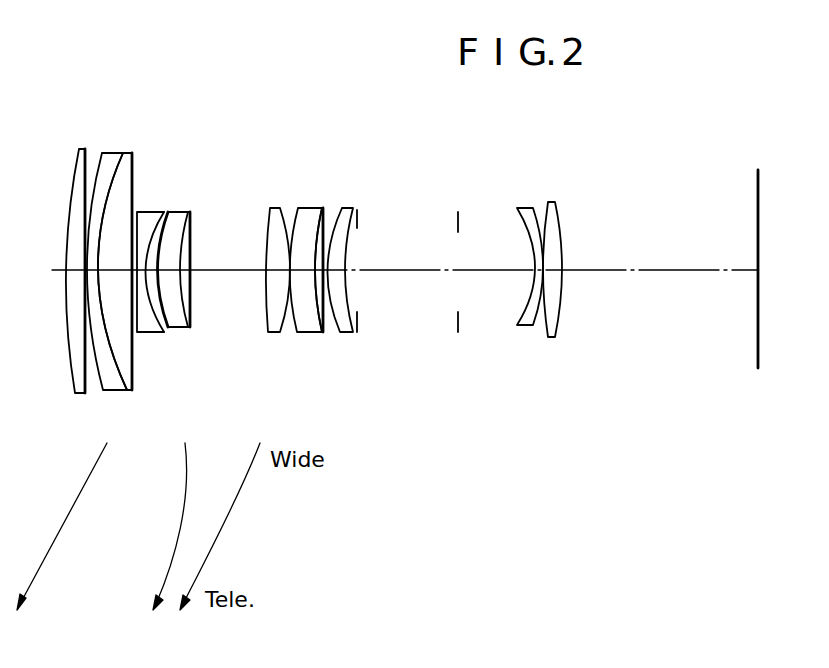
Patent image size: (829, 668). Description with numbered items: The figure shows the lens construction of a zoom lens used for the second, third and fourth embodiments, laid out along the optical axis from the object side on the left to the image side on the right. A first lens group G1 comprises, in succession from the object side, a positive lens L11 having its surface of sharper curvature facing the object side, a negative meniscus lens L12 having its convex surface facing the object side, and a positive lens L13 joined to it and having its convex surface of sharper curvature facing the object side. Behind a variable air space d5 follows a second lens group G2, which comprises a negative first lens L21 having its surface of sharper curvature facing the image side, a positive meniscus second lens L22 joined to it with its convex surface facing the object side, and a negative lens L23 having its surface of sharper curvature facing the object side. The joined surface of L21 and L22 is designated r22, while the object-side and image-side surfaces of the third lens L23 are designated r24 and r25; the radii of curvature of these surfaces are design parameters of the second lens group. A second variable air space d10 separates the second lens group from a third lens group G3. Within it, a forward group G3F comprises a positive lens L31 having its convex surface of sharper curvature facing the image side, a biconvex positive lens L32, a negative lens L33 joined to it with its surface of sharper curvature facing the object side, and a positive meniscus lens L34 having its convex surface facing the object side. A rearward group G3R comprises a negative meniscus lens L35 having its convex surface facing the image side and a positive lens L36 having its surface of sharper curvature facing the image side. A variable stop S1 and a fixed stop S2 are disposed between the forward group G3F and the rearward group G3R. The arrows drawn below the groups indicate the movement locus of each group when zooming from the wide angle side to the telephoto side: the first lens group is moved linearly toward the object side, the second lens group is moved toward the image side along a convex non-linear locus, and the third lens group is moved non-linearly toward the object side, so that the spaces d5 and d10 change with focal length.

The positive lens L11 is at (77, 158).
The negative meniscus lens L12 is at (107, 158).
The positive lens L13 is at (127, 155).
The first lens group G1 is at (88, 268).
The air space between first and second lens groups d5 is at (138, 270).
The negative first lens L21 is at (190, 244).
The positive meniscus second lens L22 is at (161, 212).
The negative lens L23 is at (207, 224).
The joined surface of the first and second lenses in the second lens group r22 is at (143, 250).
The object-side surface of the third lens in the second lens group r24 is at (179, 257).
The image-side surface of the third lens in the second lens group r25 is at (215, 281).
The second lens group G2 is at (191, 238).
The air space between second and third lens groups d10 is at (223, 273).
The positive lens L31 is at (272, 208).
The biconvex positive lens L32 is at (297, 208).
The negative lens L33 is at (322, 208).
The positive meniscus lens L34 is at (345, 208).
The negative meniscus lens L35 is at (523, 208).
The positive lens L36 is at (555, 203).
The forward group G3F is at (316, 238).
The rearward group G3R is at (551, 267).
The third lens group G3 is at (427, 258).
The variable stop S1 is at (360, 217).
The fixed stop S2 is at (459, 217).